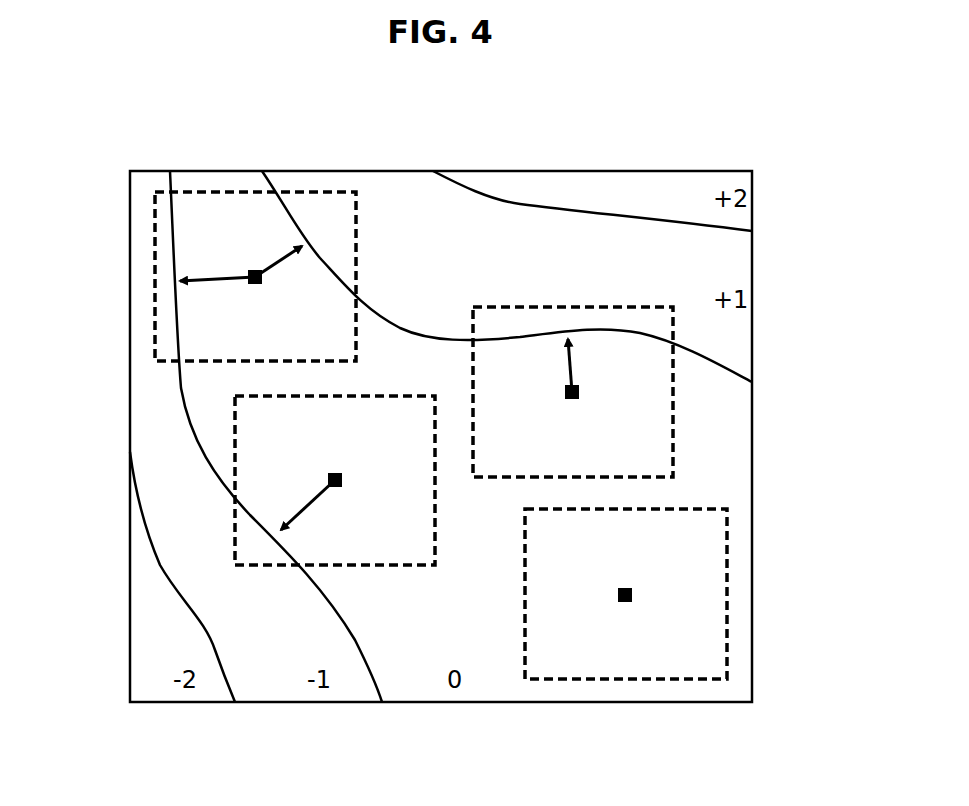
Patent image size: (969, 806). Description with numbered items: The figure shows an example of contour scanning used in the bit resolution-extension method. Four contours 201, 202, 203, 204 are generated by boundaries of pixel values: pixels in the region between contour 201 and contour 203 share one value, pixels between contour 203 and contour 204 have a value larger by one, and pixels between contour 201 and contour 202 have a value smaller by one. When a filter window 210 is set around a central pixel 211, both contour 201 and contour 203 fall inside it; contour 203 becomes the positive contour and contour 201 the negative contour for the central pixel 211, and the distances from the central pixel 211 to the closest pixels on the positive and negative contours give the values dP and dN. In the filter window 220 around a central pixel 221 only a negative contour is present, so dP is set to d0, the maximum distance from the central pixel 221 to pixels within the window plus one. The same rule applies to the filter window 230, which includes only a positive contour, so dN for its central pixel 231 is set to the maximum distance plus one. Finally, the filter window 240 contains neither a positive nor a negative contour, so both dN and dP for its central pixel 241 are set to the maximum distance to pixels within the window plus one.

The contour 201 is at (182, 395).
The contour 202 is at (157, 563).
The contour 203 is at (383, 316).
The contour 204 is at (522, 202).
The filter window 210 is at (197, 192).
The central pixel 211 is at (262, 282).
The filter window 220 is at (353, 567).
The central pixel 221 is at (340, 488).
The filter window 230 is at (530, 307).
The central pixel 231 is at (582, 395).
The filter window 240 is at (727, 570).
The central pixel 241 is at (627, 590).